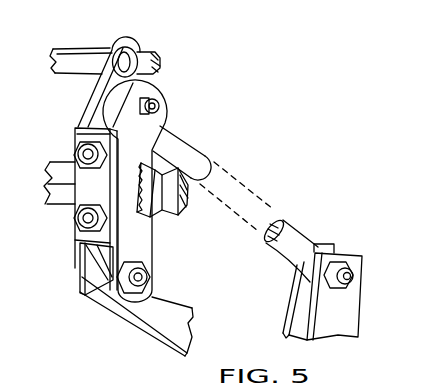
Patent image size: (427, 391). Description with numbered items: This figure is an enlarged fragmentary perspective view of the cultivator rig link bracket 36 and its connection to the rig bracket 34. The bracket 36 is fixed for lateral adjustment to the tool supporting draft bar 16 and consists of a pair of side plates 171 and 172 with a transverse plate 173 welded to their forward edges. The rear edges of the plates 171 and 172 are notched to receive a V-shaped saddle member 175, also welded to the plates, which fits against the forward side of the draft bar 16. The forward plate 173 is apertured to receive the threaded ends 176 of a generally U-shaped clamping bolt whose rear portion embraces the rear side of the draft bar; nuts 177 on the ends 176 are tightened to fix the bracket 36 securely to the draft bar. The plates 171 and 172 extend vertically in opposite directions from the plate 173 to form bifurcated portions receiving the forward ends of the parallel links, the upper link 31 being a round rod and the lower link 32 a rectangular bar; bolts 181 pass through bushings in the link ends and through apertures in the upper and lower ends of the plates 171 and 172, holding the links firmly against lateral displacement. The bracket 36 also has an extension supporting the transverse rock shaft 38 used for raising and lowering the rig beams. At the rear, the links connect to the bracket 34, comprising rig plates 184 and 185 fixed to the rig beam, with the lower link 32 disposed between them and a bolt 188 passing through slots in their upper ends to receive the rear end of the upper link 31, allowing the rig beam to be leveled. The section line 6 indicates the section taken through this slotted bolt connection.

The rock shaft 38 is at (113, 50).
The side plate 171 is at (98, 107).
The side plate 172 is at (162, 121).
The bolt 181 is at (151, 105).
The upper link 31 is at (207, 160).
The V-shaped saddle member 175 is at (152, 214).
The transverse plate 173 is at (87, 195).
The clamping bolt ends 176 is at (80, 136).
The nut 177 is at (88, 153).
The draft bar 16 is at (57, 190).
The cultivator rig link bracket 36 is at (70, 267).
The lower link 32 is at (160, 318).
The rig plate 184 is at (295, 312).
The rig plate 185 is at (347, 310).
The bolt 188 is at (355, 276).
The rig bracket 34 is at (343, 340).
The section line 6- 6 is at (268, 270).